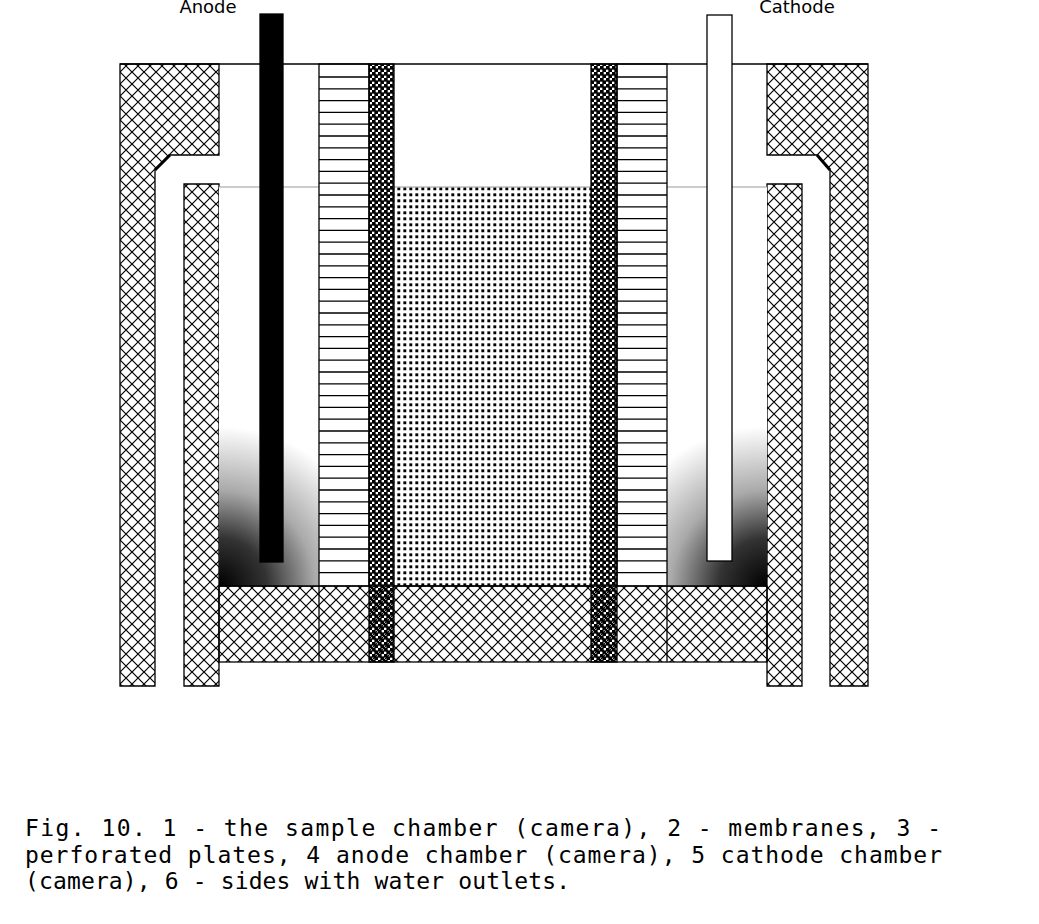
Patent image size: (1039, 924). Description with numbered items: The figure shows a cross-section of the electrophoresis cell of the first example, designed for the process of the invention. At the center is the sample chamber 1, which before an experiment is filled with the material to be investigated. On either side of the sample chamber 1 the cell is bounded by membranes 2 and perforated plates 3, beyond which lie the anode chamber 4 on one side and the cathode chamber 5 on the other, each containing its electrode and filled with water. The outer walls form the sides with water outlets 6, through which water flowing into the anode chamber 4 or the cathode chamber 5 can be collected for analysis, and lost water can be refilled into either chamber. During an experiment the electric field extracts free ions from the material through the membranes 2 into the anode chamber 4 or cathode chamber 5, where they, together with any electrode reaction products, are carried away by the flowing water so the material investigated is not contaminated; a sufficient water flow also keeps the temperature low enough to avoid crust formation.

The sample chamber 1 is at (483, 495).
The membranes 2 is at (494, 380).
The perforated plates 3 is at (493, 380).
The anode chamber 4 is at (237, 586).
The cathode chamber 5 is at (708, 577).
The sides with water outlets 6 is at (184, 661).